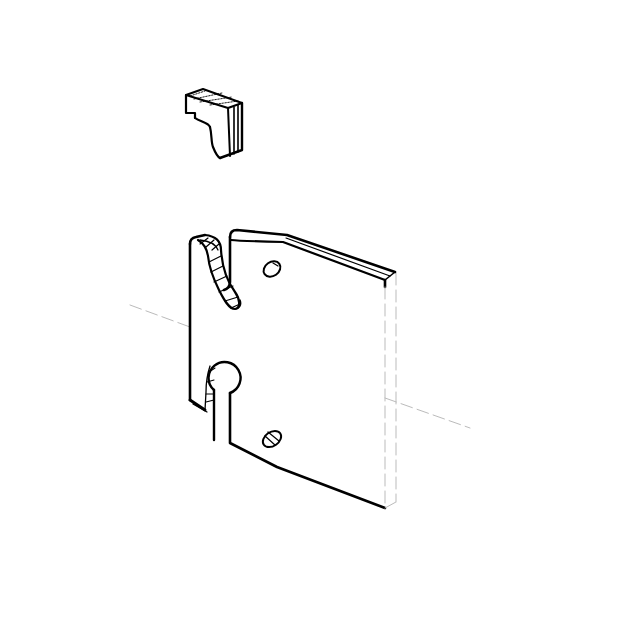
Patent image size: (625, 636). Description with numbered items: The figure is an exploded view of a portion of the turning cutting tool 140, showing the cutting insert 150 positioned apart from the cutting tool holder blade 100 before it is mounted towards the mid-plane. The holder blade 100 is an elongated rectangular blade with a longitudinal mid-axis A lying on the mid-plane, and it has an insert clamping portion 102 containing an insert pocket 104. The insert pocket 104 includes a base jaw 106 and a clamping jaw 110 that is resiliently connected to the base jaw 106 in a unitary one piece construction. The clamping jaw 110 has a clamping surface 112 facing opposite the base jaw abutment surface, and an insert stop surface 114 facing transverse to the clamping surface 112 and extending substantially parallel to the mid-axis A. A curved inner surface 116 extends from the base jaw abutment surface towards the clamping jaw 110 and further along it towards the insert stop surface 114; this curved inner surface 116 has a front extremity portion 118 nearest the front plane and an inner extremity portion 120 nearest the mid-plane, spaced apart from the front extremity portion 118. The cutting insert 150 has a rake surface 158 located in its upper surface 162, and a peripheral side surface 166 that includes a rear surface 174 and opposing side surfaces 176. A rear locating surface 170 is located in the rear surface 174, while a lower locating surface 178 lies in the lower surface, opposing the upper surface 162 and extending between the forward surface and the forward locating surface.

The cutting tool holder blade 100 is at (350, 211).
The insert clamping portion 102 is at (179, 392).
The insert pocket 104 is at (196, 218).
The base jaw 106 is at (249, 238).
The clamping jaw 110 is at (182, 264).
The clamping surface 112 is at (210, 236).
The insert stop surface 114 is at (192, 238).
The curved inner surface 116 is at (246, 285).
The front extremity portion 118 is at (200, 290).
The inner extremity portion 120 is at (238, 309).
The cutting tool 140 is at (393, 145).
The cutting insert 150 is at (189, 65).
The rake surface 158 is at (202, 90).
The upper surface 162 is at (228, 97).
The peripheral side surface 166 is at (181, 104).
The rear locating surface 170 is at (234, 119).
The rear surface 174 is at (236, 129).
The side surfaces 176 is at (213, 123).
The lower locating surface 178 is at (188, 118).
The longitudinal mid-axis A is at (447, 422).